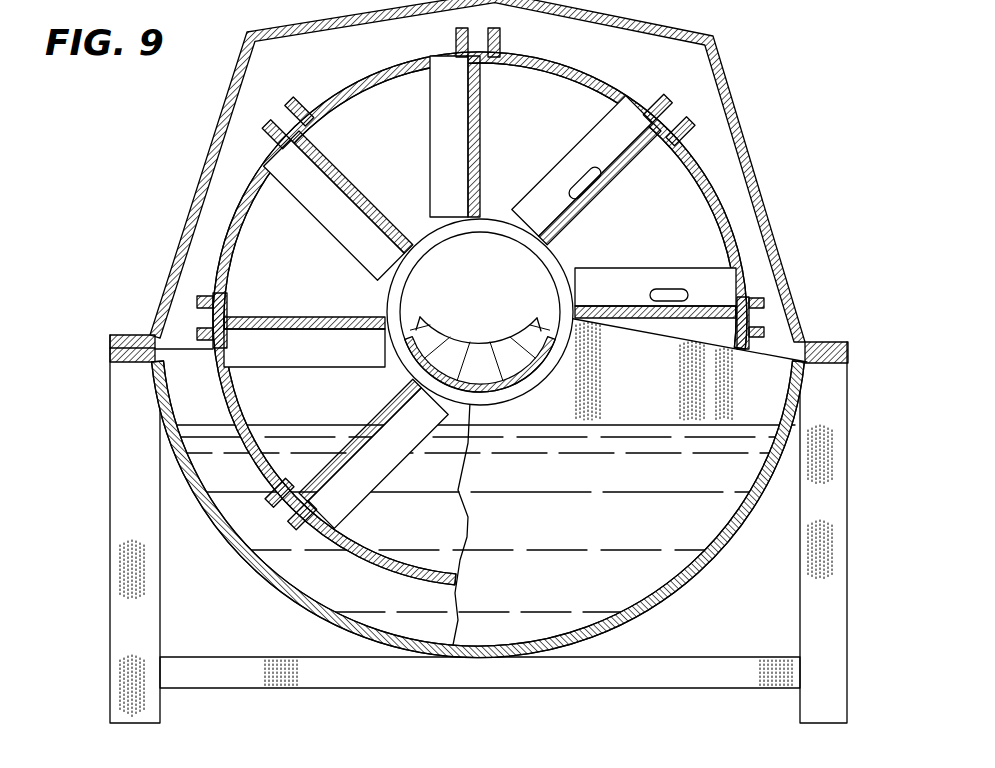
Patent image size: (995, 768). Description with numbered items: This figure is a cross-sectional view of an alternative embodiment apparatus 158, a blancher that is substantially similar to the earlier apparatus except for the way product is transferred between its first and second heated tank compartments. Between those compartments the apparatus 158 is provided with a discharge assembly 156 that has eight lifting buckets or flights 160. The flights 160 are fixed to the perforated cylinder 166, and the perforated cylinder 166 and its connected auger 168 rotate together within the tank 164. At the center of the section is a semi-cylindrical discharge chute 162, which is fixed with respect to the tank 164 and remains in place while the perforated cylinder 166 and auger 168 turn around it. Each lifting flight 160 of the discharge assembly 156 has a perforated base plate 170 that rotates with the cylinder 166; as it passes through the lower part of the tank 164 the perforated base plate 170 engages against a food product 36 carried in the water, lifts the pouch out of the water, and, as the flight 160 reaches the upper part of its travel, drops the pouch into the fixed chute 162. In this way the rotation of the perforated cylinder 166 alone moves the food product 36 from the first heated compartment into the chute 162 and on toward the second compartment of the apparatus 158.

The alternative embodiment apparatus 158 is at (150, 197).
The discharge assembly 156 is at (557, 100).
The auger 168 is at (703, 170).
The perforated cylinder 166 is at (727, 217).
The lifting flights 160 is at (363, 187).
The food product 36 is at (583, 180).
The perforated base plate 170 is at (626, 178).
The semi-cylindrical discharge chute 162 is at (553, 372).
The tank 164 is at (710, 570).